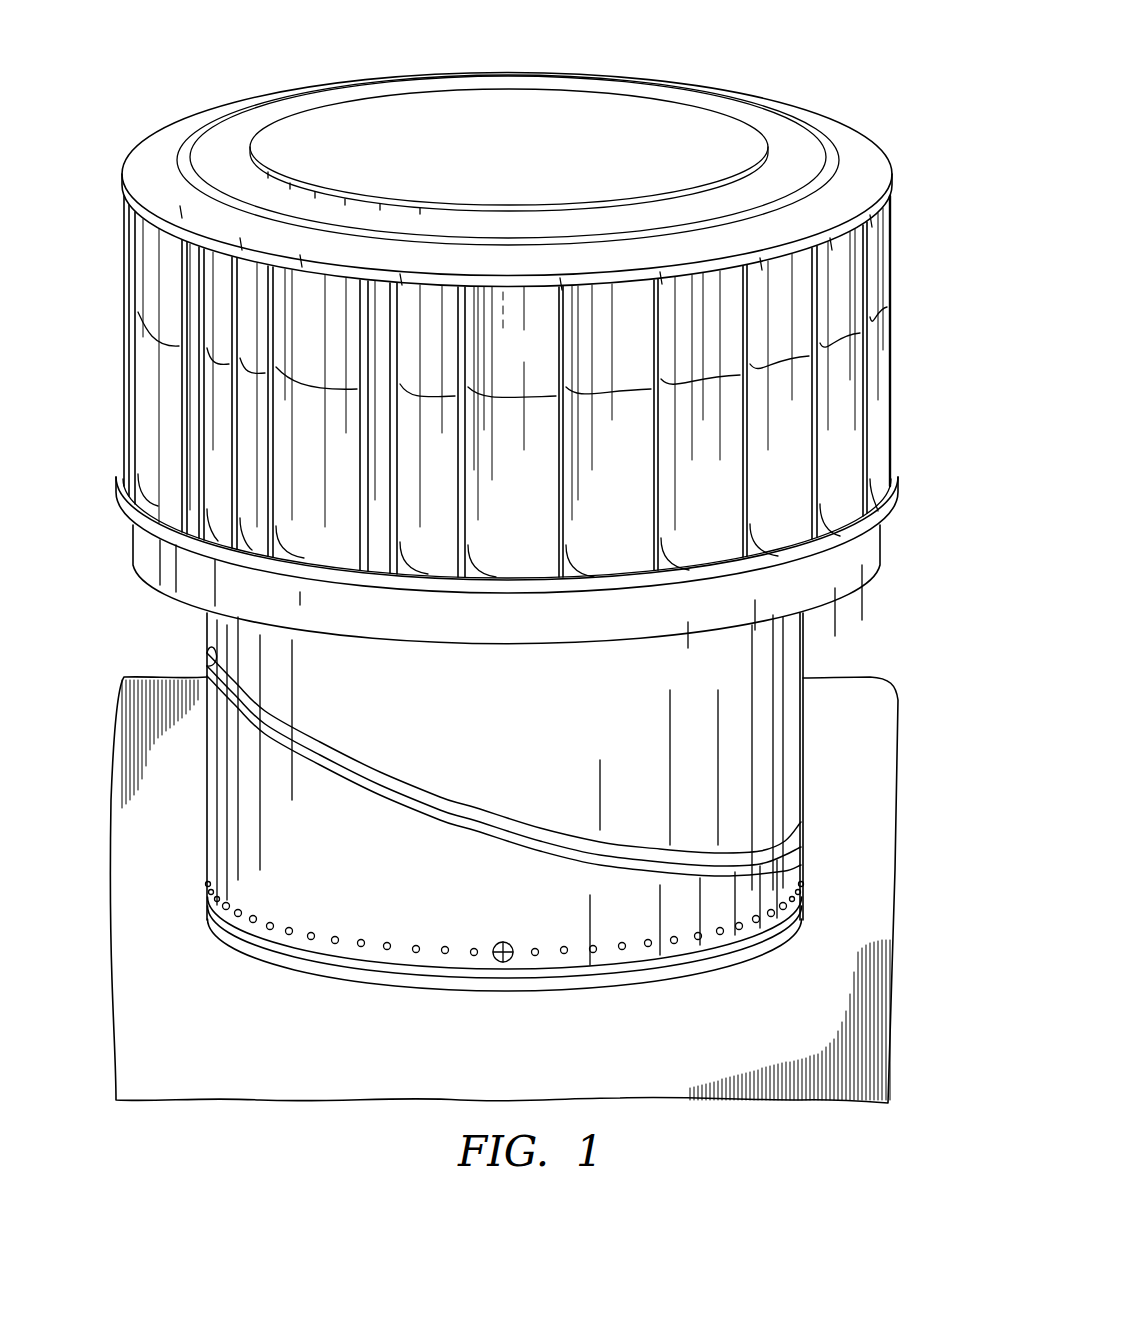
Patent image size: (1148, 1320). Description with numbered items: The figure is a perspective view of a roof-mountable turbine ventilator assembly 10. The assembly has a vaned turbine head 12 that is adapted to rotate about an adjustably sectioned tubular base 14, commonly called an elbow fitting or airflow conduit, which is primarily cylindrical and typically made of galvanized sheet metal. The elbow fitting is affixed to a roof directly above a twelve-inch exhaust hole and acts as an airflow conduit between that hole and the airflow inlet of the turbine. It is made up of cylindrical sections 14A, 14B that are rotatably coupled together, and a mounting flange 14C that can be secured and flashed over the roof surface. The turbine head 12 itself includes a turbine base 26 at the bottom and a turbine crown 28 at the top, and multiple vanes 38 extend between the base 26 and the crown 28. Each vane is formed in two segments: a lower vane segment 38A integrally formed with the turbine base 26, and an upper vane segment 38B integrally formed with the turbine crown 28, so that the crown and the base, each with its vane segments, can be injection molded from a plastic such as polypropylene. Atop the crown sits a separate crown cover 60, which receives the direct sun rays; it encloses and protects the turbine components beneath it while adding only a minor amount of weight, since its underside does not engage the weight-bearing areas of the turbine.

The turbine ventilator assembly 10 is at (860, 68).
The turbine head 12 is at (543, 159).
The tubular base 14 is at (507, 835).
The cylindrical section 14A is at (207, 830).
The cylindrical section 14B is at (805, 668).
The mounting flange 14C is at (520, 1057).
The turbine base 26 is at (886, 540).
The turbine crown 28 is at (233, 128).
The vanes 38 is at (546, 386).
The lower vane segment 38A is at (550, 526).
The upper vane segment 38B is at (550, 358).
The crown cover 60 is at (662, 100).